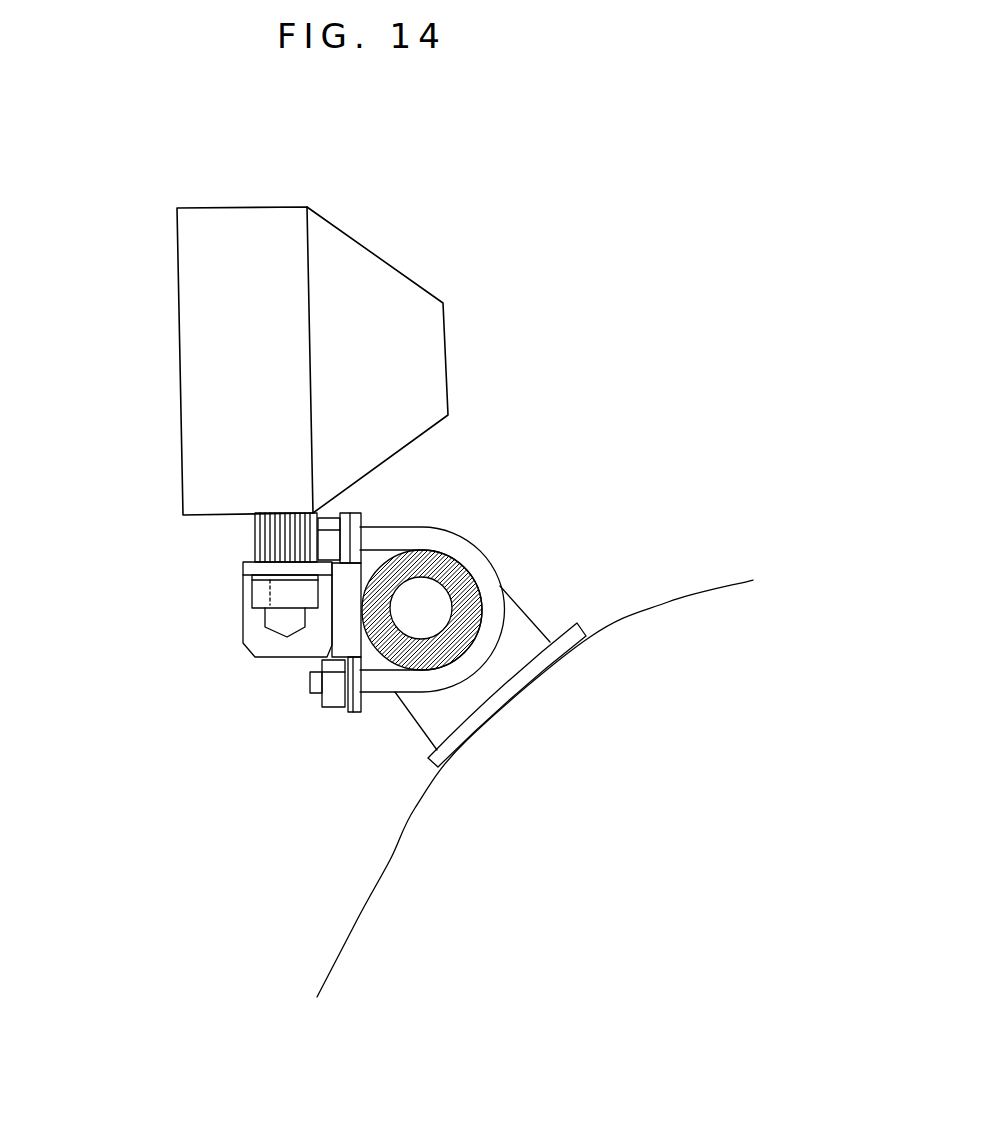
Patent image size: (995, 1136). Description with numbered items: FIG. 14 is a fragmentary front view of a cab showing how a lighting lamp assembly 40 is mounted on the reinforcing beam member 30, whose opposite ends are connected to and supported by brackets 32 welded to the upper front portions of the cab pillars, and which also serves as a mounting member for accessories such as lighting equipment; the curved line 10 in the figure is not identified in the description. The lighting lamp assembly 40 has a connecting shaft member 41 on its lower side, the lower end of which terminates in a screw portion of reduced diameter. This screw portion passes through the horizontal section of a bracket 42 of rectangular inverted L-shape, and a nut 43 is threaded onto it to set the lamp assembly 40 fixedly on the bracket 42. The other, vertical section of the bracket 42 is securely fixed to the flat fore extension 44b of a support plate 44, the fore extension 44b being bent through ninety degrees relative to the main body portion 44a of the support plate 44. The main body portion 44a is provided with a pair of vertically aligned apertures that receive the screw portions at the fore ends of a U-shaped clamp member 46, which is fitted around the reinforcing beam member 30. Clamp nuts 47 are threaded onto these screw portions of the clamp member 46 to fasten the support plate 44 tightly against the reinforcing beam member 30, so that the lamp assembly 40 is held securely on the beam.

The tire 10 is at (672, 590).
The reinforcing beam member 30 is at (473, 630).
The bracket 32 is at (438, 712).
The lighting lamp assembly 40 is at (377, 270).
The connecting shaft member 41 is at (267, 538).
The bracket 42 is at (253, 567).
The nut 43 is at (260, 595).
The support plate 44 is at (355, 722).
The main body portion 44a is at (354, 520).
The flat fore extension 44b is at (345, 625).
The U-shaped clamp member 46 is at (453, 540).
The clamp nut 47 is at (330, 537).